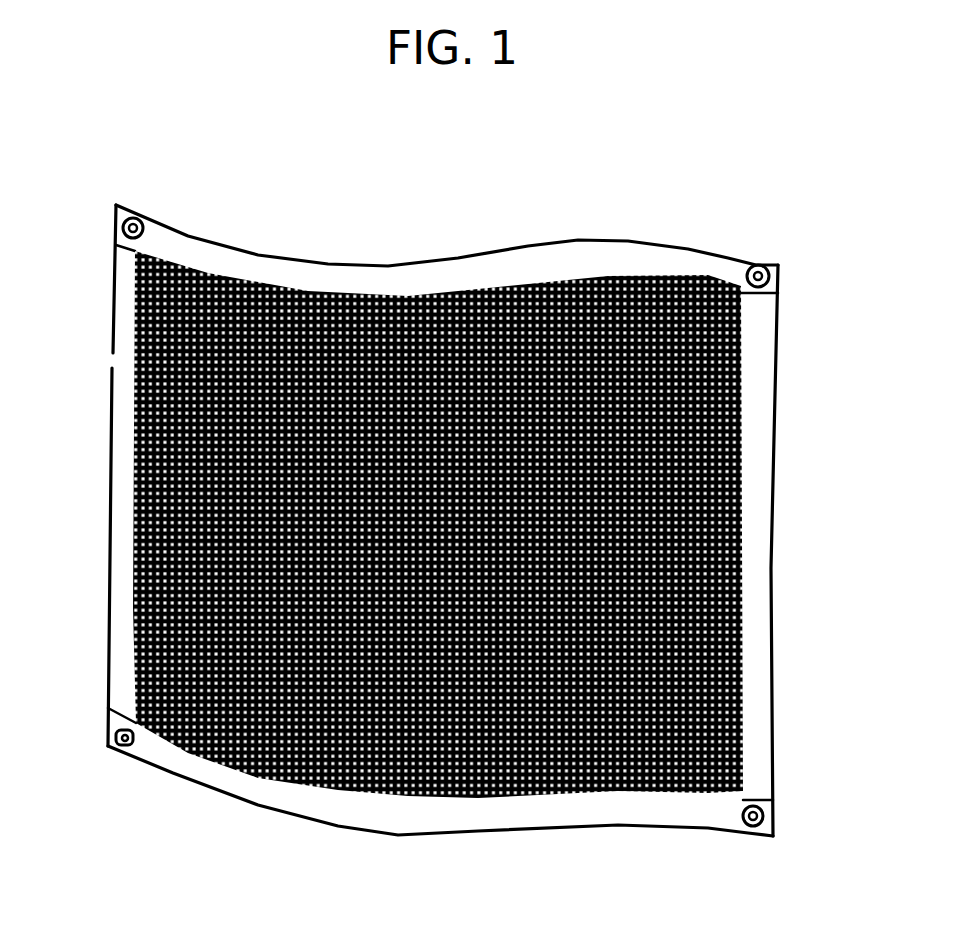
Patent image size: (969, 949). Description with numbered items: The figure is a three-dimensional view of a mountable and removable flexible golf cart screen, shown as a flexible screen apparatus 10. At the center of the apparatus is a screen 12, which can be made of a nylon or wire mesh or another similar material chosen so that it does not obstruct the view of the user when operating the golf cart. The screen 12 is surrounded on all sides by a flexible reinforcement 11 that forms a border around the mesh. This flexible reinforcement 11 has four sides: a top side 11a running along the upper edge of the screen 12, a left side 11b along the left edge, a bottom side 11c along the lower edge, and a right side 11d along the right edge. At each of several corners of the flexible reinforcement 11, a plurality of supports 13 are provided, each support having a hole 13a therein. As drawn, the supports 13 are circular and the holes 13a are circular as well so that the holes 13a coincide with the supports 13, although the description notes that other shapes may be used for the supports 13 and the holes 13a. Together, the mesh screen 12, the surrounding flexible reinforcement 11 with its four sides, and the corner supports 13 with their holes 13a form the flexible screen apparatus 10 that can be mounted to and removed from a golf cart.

The flexible screen apparatus 10 is at (591, 182).
The flexible reinforcement 11 is at (626, 244).
The top side 11a is at (293, 259).
The left side 11b is at (113, 577).
The bottom side 11c is at (472, 813).
The right side 11d is at (760, 651).
The screen 12 is at (128, 650).
The supports 13 is at (131, 209).
The holes 13a is at (121, 210).